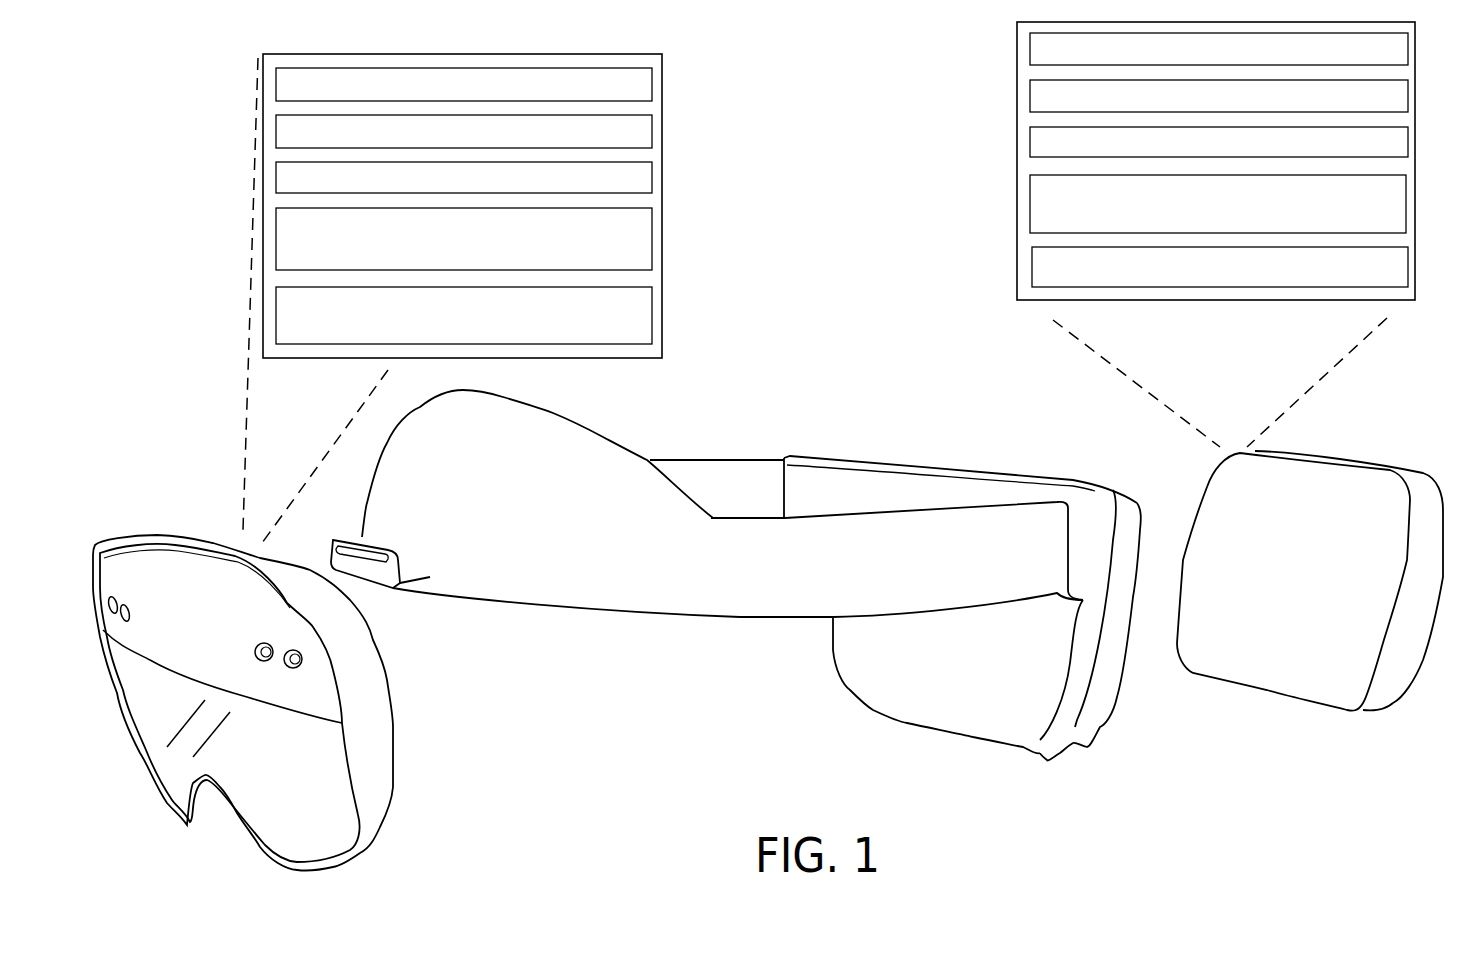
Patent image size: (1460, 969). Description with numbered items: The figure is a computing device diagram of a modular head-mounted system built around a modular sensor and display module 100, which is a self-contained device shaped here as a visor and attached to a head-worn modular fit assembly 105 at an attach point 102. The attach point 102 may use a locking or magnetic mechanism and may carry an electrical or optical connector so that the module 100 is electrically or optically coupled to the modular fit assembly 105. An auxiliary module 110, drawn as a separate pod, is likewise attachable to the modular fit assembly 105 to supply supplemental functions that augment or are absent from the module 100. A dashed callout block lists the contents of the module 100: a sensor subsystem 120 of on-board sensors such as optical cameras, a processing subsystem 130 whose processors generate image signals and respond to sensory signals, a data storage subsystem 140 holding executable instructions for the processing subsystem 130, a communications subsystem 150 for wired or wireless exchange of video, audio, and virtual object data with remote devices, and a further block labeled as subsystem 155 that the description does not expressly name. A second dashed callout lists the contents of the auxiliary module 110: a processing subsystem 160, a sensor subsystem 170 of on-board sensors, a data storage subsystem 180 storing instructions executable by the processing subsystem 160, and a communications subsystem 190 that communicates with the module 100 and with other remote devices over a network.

The modular sensor and display module 100 is at (393, 757).
The attach point 102 is at (413, 562).
The modular fit assembly 105 is at (815, 447).
The auxiliary module 110 is at (1363, 450).
The sensor subsystem 120 is at (570, 144).
The processing subsystem 130 is at (464, 84).
The data storage subsystem 140 is at (610, 191).
The communications subsystem 150 is at (444, 264).
The power subsystem 155 is at (562, 331).
The processing subsystem 160 is at (1219, 49).
The sensor subsystem 170 is at (1323, 107).
The data storage subsystem 180 is at (1365, 154).
The communications subsystem 190 is at (1198, 229).